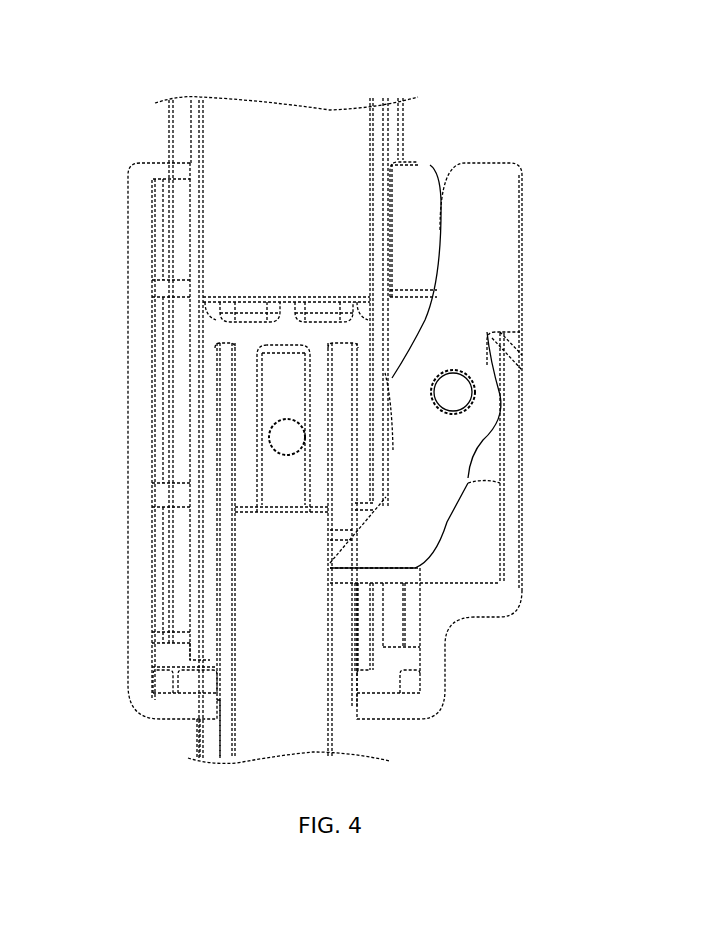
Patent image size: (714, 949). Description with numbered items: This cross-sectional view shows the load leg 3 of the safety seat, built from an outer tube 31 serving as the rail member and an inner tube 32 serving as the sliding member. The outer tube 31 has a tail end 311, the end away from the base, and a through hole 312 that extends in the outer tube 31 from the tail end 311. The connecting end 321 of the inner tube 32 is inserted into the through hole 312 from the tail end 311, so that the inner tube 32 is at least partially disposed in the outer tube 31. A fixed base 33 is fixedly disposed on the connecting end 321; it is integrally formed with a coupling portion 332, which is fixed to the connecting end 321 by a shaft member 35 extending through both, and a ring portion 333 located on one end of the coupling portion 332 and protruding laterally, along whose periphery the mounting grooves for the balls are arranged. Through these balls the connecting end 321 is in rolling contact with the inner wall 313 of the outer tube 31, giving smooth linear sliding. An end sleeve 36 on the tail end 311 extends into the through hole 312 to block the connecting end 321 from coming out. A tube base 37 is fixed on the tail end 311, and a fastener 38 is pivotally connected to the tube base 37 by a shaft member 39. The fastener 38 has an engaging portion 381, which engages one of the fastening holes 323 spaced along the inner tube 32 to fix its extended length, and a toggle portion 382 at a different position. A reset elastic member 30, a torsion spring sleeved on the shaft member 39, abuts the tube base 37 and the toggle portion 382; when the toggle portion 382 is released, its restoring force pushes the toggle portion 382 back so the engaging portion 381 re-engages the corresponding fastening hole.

The load leg 3 is at (113, 88).
The reset elastic member 30 is at (392, 378).
The outer tube 31 is at (197, 203).
The tail end 311 is at (197, 661).
The through hole 312 is at (248, 143).
The inner wall 313 is at (204, 112).
The inner tube 32 is at (220, 742).
The connecting end 321 is at (225, 351).
The fastening holes 323 is at (377, 578).
The fixed base 33 is at (280, 496).
The coupling portion 332 is at (260, 384).
The ring portion 333 is at (218, 323).
The shaft member 35 is at (284, 434).
The end sleeve 36 is at (210, 633).
The tube base 37 is at (428, 658).
The fastener 38 is at (467, 425).
The engaging portion 381 is at (367, 548).
The toggle portion 382 is at (500, 217).
The shaft member 39 is at (455, 391).